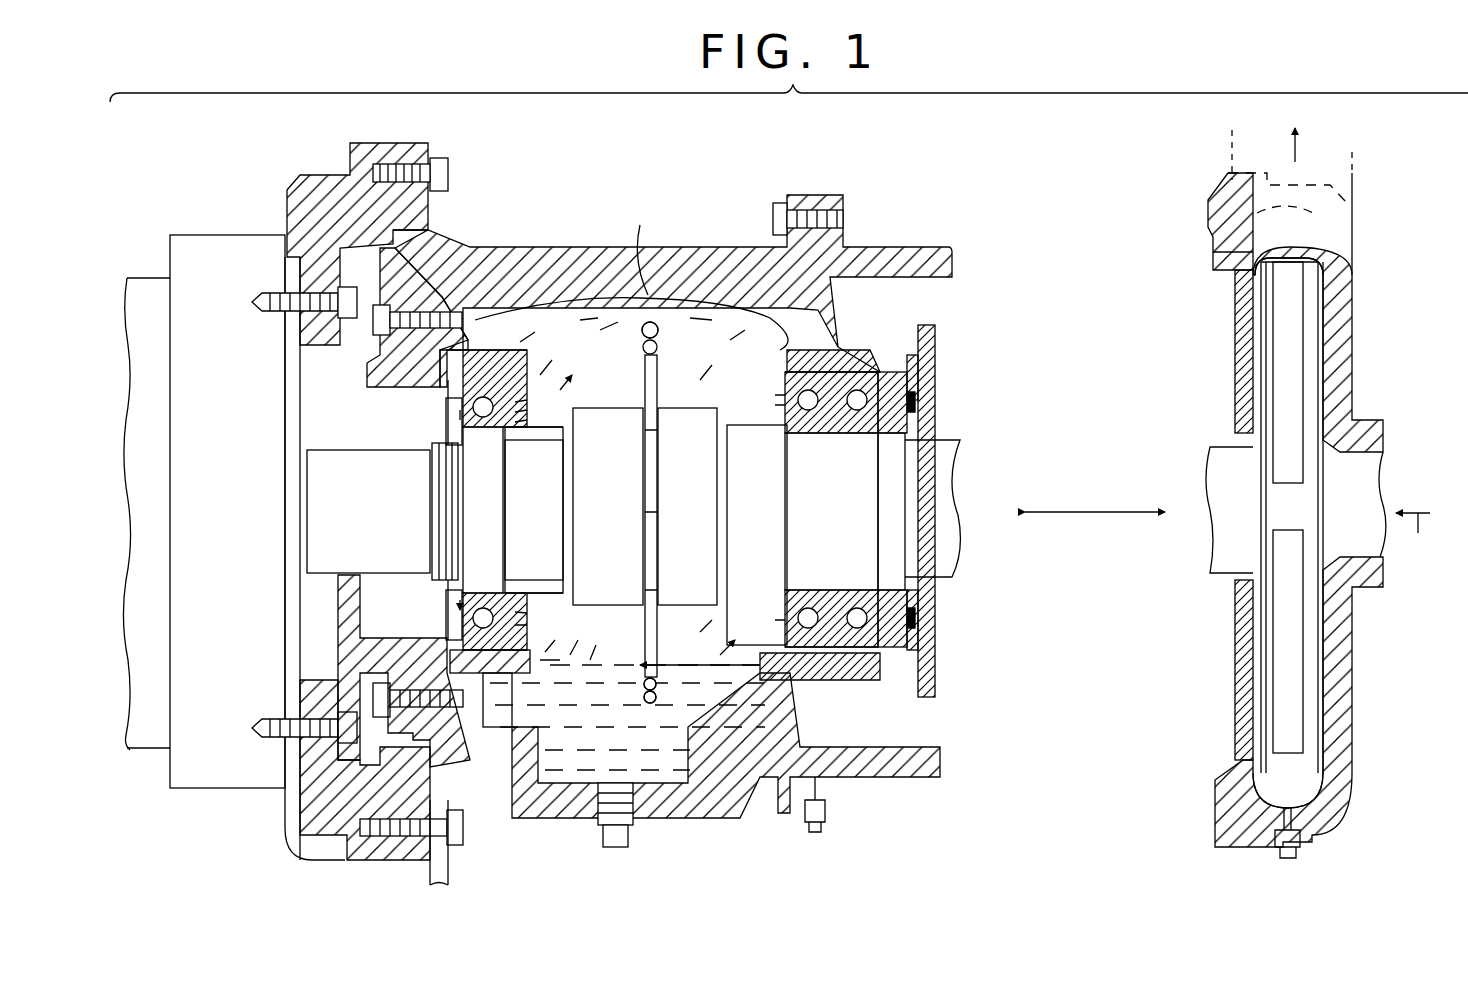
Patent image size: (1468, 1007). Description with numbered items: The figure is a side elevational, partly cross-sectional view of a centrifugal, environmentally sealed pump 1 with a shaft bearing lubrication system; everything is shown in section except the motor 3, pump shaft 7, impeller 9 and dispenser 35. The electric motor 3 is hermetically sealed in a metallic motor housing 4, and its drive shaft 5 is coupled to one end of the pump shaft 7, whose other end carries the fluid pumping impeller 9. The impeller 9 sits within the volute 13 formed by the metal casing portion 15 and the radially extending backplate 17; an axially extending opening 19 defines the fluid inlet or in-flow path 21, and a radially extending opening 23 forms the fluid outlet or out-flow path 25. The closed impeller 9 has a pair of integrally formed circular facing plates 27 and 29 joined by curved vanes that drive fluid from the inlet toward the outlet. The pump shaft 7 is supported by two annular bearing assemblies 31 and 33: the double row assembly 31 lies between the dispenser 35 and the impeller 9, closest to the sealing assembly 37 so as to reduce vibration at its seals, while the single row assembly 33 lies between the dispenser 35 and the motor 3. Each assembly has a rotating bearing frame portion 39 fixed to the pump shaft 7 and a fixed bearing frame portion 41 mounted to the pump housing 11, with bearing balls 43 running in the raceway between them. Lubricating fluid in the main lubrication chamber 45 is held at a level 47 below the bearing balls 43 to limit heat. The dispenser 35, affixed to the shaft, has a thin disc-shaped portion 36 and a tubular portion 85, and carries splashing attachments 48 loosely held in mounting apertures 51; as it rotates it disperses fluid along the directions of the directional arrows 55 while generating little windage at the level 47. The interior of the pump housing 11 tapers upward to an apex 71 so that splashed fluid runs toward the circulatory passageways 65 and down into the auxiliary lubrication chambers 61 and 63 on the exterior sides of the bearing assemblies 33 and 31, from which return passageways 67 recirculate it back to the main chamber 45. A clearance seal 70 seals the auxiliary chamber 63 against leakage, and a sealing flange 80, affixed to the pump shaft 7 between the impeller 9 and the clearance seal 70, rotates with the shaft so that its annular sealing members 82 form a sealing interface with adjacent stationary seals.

The pump 1 is at (418, 128).
The electric motor 3 is at (140, 750).
The motor housing 4 is at (140, 278).
The drive shaft 5 is at (300, 522).
The pump shaft 7 is at (352, 528).
The impeller 9 is at (1312, 393).
The pump housing 11 is at (302, 190).
The volute 13 is at (1300, 232).
The casing portion 15 is at (1345, 330).
The backplate 17 is at (1240, 375).
The axially extending opening 19 is at (1378, 492).
The in-flow path 21 is at (1416, 540).
The radially extending opening 23 is at (1278, 173).
The out-flow path 25 is at (1298, 162).
The circular facing plate 27 is at (1315, 630).
The circular facing plate 29 is at (1268, 667).
The bearing assembly 31 is at (840, 420).
The bearing assembly 33 is at (500, 430).
The lubricating fluid dispenser 35 is at (658, 395).
The disc-shaped portion 36 is at (657, 548).
The sealing assembly 37 is at (958, 350).
The rotating bearing frame portion 39 is at (862, 452).
The fixed bearing frame portion 41 is at (518, 400).
The bearing balls 43 is at (505, 420).
The main lubrication chamber 45 is at (598, 392).
The level 47 is at (590, 690).
The splashing attachments 48 is at (660, 345).
The mounting apertures 51 is at (642, 590).
The directional arrows 55 is at (544, 335).
The auxiliary lubrication chamber 61 is at (450, 436).
The auxiliary lubrication chamber 63 is at (883, 425).
The circulatory passageway 65 is at (455, 385).
The return passageway 67 is at (490, 725).
The clearance seal 70 is at (936, 422).
The apex 71 is at (637, 241).
The sealing flange 80 is at (928, 330).
The sealing members 82 is at (935, 398).
The tubular portion 85 is at (582, 550).